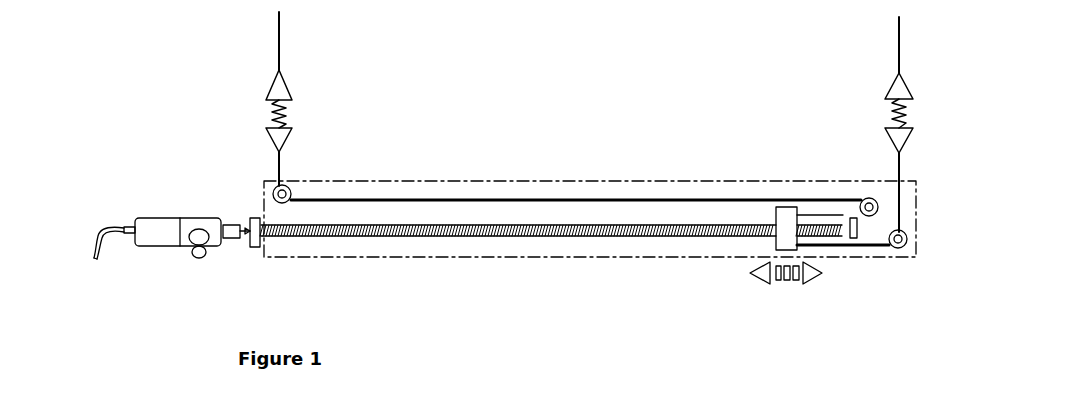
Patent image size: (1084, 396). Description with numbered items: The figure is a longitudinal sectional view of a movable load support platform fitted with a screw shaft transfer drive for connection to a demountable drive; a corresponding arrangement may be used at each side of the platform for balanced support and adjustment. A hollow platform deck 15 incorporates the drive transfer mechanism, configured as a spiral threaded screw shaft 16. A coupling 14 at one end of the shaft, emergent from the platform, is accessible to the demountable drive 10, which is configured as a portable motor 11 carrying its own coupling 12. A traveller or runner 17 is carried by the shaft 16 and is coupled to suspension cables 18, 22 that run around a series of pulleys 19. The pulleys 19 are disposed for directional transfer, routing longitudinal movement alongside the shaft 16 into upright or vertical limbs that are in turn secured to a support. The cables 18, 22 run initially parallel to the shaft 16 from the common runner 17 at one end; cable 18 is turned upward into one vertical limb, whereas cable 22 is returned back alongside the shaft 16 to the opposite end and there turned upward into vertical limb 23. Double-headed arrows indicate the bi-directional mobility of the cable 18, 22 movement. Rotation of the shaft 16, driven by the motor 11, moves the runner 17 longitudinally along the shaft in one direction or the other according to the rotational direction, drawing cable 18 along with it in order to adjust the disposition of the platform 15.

The demountable drive 10 is at (189, 278).
The portable motor 11 is at (168, 240).
The coupling 12 is at (228, 232).
The coupling 14 is at (255, 240).
The hollow platform deck 15 is at (430, 158).
The screw shaft 16 is at (402, 230).
The runner 17 is at (782, 235).
The suspension cable 18 is at (832, 248).
The pulleys 19 is at (904, 245).
The suspension cable 22 is at (843, 215).
The vertical limb 23 is at (282, 43).